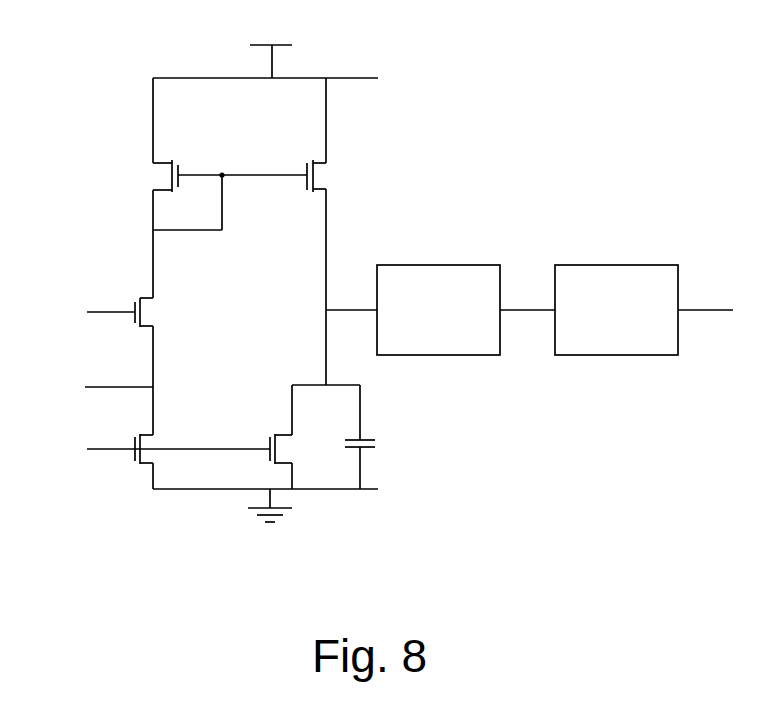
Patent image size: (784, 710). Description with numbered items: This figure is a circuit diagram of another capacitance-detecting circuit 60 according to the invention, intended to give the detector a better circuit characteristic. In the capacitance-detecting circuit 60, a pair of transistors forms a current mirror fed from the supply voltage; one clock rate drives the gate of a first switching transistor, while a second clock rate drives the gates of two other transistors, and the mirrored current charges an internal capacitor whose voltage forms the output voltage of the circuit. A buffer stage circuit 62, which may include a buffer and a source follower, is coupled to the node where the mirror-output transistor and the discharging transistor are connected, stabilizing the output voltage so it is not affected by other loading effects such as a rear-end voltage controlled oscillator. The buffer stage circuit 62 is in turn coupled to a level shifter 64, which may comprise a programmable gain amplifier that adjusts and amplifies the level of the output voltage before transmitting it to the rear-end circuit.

The capacitance-detecting circuit 60 is at (527, 559).
The buffer stage circuit 62 is at (440, 265).
The level shifter 64 is at (612, 265).